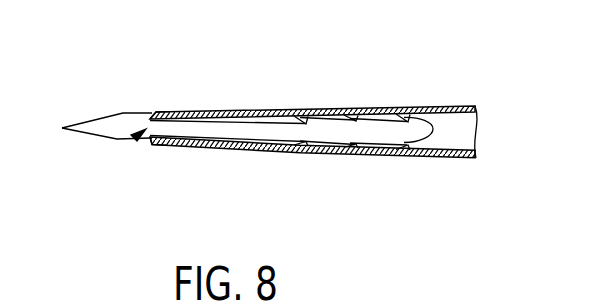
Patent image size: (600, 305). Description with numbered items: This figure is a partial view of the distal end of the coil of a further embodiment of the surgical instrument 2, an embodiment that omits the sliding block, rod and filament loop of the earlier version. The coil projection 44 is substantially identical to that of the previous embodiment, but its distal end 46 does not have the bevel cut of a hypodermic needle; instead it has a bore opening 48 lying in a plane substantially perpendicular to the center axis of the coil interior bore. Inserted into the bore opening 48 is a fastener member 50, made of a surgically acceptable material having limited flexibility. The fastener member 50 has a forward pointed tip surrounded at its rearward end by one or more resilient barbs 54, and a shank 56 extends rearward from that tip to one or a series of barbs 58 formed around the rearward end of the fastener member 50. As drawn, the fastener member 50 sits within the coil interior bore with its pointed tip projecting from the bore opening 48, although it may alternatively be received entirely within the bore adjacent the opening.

The introducer needle assembly 2 is at (97, 125).
The coil projection 44 is at (346, 107).
The distal end of the coiled projection 46 is at (164, 111).
The bore opening 48 is at (134, 138).
The fastener member 50 is at (263, 121).
The resilient barbs 54 is at (151, 147).
The shank 56 is at (203, 119).
The barbs 58 is at (301, 152).